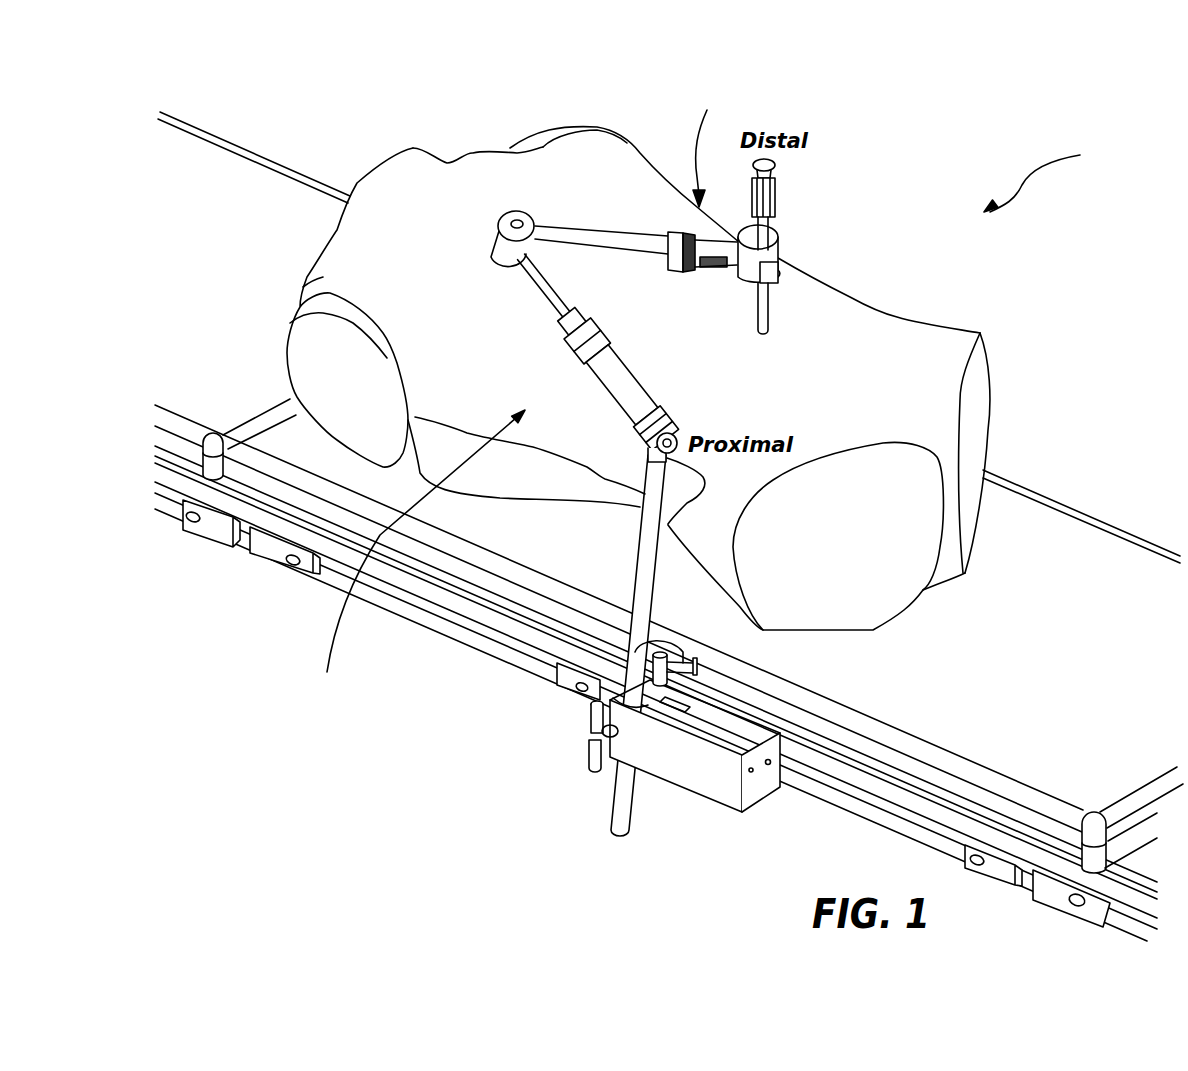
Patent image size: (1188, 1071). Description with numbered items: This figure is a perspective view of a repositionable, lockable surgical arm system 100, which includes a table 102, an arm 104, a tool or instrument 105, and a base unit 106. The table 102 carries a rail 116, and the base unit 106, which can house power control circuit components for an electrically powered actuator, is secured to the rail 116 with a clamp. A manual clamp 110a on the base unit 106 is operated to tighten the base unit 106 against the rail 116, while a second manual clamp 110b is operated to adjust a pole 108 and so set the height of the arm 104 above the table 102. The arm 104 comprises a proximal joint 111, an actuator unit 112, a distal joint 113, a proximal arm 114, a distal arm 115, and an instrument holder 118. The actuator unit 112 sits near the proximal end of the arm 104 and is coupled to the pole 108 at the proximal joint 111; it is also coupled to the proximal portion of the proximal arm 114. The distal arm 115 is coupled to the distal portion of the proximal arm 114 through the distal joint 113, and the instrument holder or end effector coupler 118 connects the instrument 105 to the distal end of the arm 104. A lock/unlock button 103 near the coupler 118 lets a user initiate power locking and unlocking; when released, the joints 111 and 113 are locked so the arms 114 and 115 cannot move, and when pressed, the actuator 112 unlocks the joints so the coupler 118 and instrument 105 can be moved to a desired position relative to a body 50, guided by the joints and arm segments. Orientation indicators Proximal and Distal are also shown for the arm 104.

The body 50 is at (885, 352).
The lockable surgical arm system 100 is at (1047, 176).
The table 102 is at (1068, 552).
The lock/unlock button 103 is at (712, 270).
The arm 104 is at (413, 543).
The tool 105 is at (787, 207).
The base unit 106 is at (703, 787).
The pole 108 is at (608, 803).
The manual clamp 110a is at (590, 730).
The manual clamp 110b is at (640, 645).
The proximal joint 111 is at (648, 520).
The actuator unit 112 is at (620, 388).
The distal joint 113 is at (503, 213).
The proximal arm 114 is at (534, 253).
The distal arm 115 is at (584, 232).
The rail 116 is at (500, 653).
The instrument holder 118 is at (716, 149).